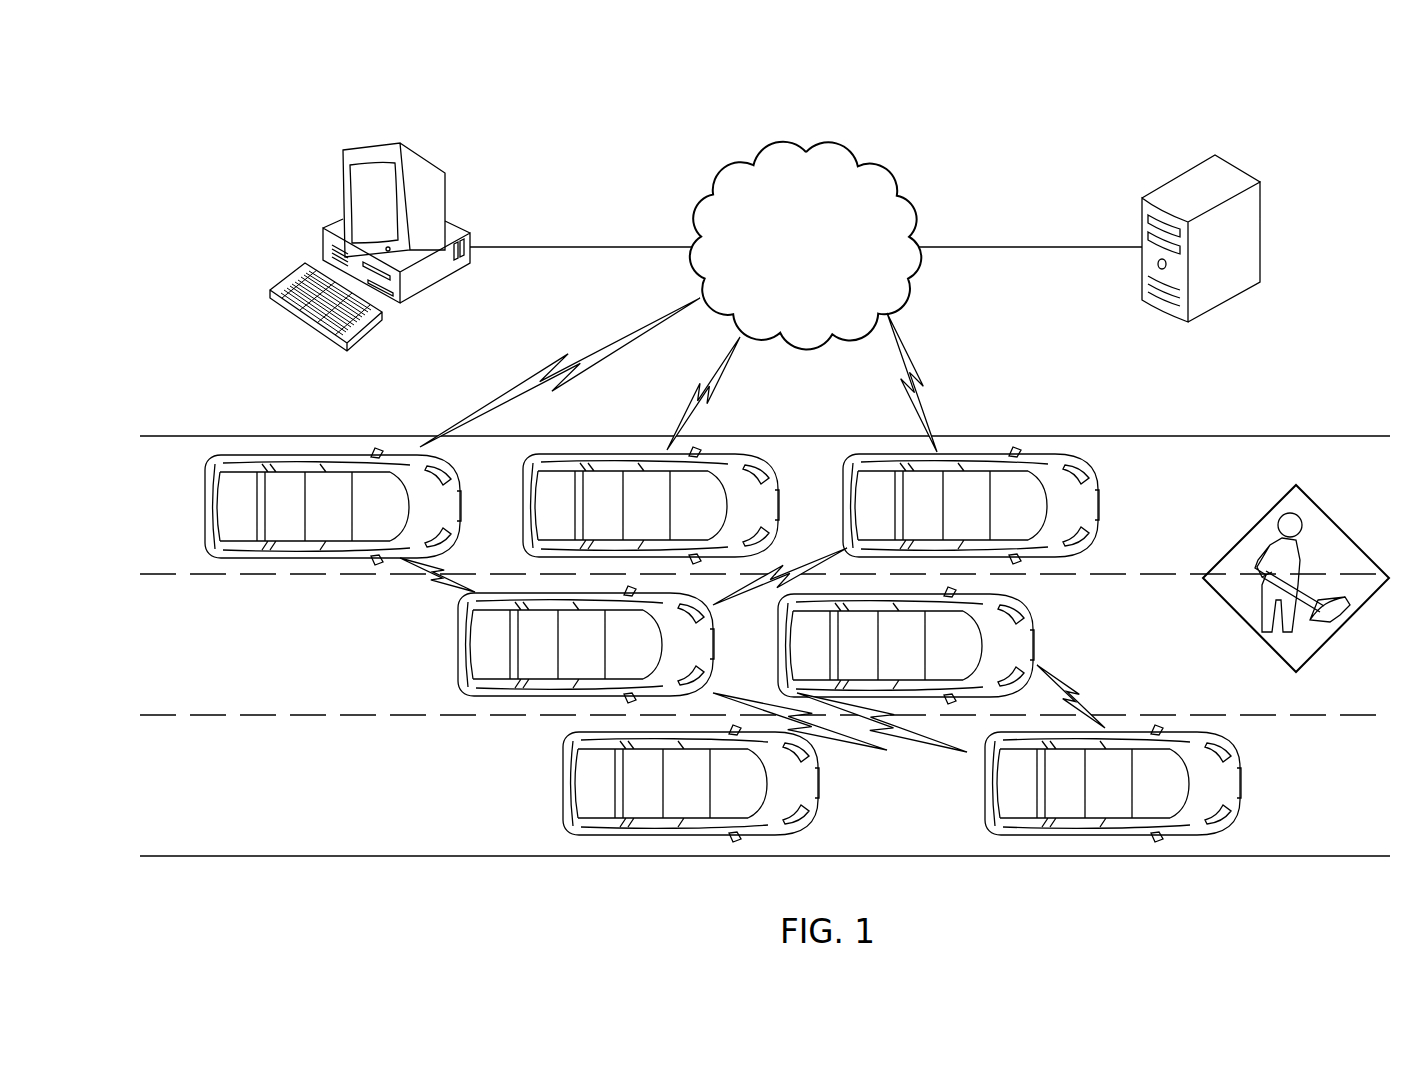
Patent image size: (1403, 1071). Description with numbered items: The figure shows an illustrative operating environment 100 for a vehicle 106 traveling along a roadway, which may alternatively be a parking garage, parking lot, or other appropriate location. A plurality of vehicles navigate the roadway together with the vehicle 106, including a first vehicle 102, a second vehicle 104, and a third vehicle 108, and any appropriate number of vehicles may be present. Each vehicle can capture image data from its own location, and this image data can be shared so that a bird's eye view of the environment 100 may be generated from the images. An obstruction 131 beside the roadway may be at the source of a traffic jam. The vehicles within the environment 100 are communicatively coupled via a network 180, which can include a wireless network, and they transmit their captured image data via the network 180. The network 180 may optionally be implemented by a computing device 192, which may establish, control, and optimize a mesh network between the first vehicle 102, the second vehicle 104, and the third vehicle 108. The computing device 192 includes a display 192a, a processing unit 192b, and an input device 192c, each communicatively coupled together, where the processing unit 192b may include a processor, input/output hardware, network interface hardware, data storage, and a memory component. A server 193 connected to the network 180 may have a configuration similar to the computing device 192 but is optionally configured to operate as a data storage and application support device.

The environment 100 is at (180, 160).
The computing device 192 is at (400, 240).
The display 192a is at (343, 163).
The processing unit 192b is at (437, 288).
The input device 192c is at (362, 331).
The network 180 is at (882, 176).
The server 193 is at (1283, 180).
The obstruction 131 is at (1340, 528).
The first vehicle 102 is at (1036, 647).
The second vehicle 104 is at (458, 643).
The vehicle 106 is at (316, 560).
The third vehicle 108 is at (1242, 785).